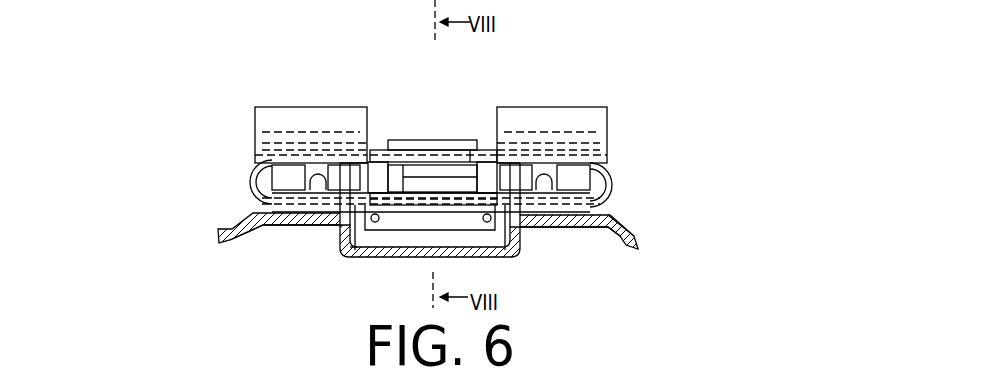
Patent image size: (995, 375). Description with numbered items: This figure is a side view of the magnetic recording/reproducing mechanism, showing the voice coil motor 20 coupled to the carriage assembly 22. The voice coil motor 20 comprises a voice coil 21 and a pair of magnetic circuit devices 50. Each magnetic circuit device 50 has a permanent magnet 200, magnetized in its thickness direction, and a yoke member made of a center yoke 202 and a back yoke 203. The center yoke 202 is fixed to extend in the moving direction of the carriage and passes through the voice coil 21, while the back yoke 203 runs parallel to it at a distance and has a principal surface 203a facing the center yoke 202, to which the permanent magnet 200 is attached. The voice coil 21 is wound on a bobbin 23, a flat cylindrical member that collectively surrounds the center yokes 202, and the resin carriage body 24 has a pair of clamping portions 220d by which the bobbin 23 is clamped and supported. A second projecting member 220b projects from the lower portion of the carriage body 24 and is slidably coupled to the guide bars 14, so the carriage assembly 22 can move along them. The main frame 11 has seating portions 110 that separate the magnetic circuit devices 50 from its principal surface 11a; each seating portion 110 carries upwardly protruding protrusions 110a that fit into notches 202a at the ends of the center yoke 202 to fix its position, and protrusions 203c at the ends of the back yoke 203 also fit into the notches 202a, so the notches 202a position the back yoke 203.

The main frame 11 is at (580, 230).
The principal surface of the main frame 11a is at (593, 211).
The guide bars 14 is at (382, 222).
The voice coil motor 20 is at (607, 162).
The voice coil 21 is at (373, 143).
The carriage assembly 22 is at (460, 118).
The bobbin 23 is at (480, 150).
The carriage body 24 is at (410, 175).
The magnetic circuit devices 50 is at (297, 88).
The seating portions 110 is at (278, 228).
The protrusions of the seating portion 110a is at (290, 227).
The permanent magnet 200 is at (253, 137).
The center yoke 202 is at (268, 178).
The notches of the center yoke 202a is at (340, 163).
The back yoke 203 is at (283, 118).
The principal surface of the back yoke 203a is at (303, 130).
The protrusions of the back yoke 203c is at (314, 165).
The second projecting member 220b is at (352, 255).
The clamping portions 220d is at (471, 150).